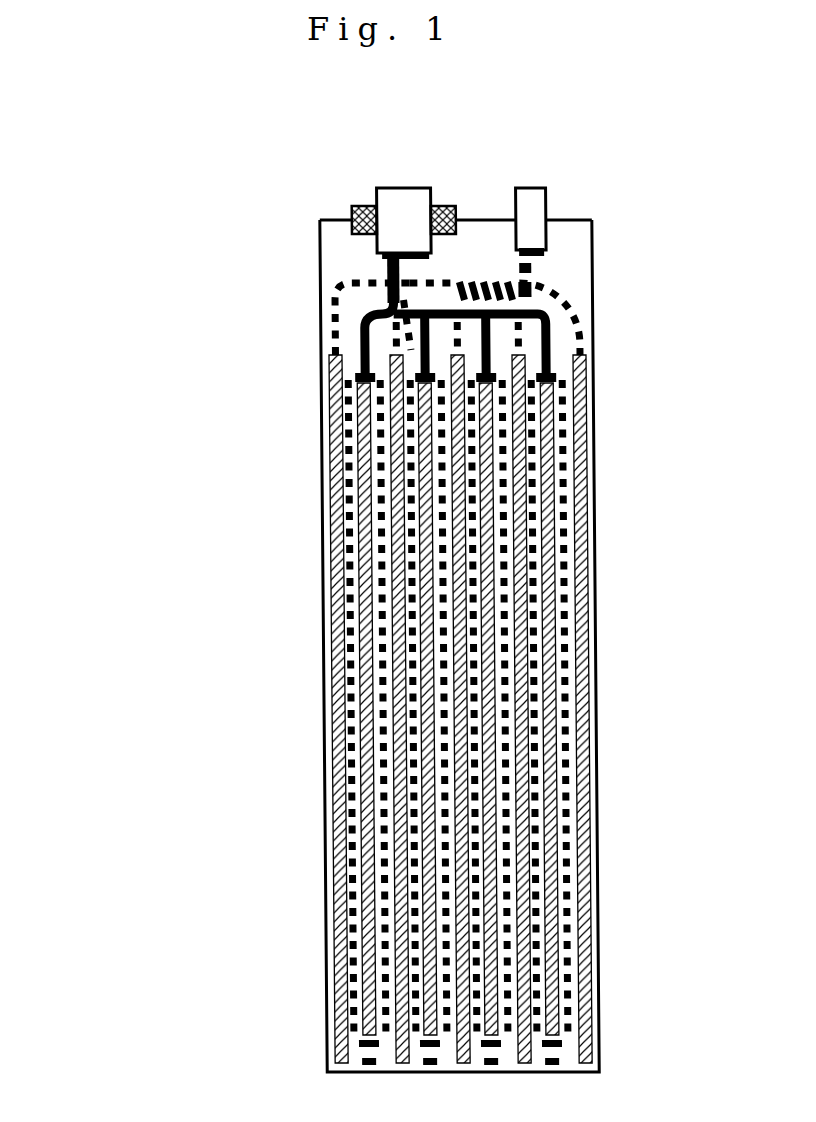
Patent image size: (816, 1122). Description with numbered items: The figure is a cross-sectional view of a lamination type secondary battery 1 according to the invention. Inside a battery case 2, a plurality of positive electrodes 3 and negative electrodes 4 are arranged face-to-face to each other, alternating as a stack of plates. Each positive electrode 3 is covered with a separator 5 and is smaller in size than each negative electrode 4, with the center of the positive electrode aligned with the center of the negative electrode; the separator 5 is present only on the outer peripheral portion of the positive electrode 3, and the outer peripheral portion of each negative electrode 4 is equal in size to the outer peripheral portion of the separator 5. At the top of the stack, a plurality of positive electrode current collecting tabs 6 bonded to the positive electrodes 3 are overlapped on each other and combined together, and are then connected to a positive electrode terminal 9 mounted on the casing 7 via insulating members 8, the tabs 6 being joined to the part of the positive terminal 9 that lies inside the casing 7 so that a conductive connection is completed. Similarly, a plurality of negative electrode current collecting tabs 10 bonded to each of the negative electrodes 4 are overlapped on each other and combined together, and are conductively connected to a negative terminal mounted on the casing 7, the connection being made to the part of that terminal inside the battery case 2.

The lamination type secondary battery 1 is at (70, 178).
The battery case 2 is at (595, 630).
The positive electrode 3 is at (363, 608).
The negative electrode 4 is at (580, 495).
The separator 5 is at (563, 402).
The positive electrode current collecting tab 6 is at (363, 333).
The casing 7 is at (482, 218).
The insulating member 8 is at (355, 217).
The positive electrode terminal 9 is at (415, 208).
The negative electrode current collecting tab 10 is at (560, 287).